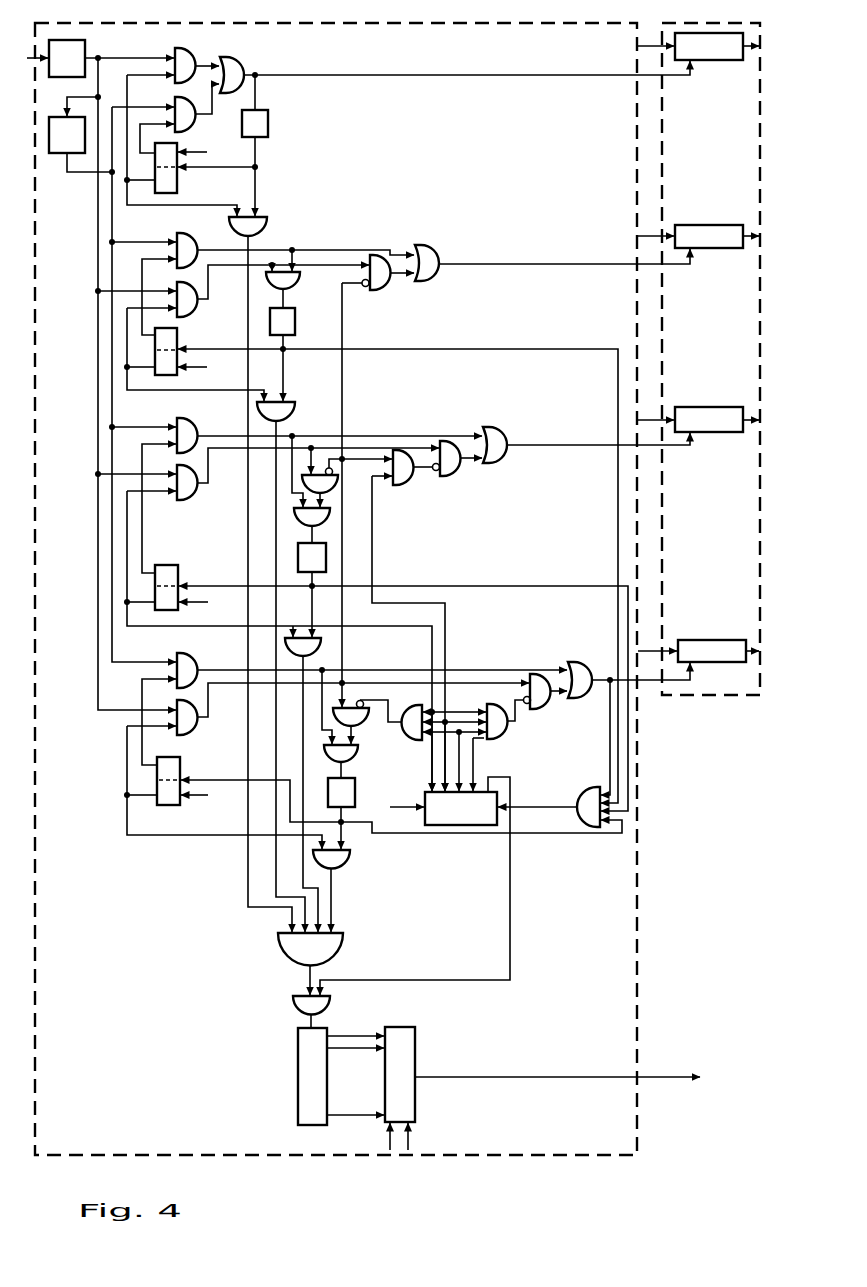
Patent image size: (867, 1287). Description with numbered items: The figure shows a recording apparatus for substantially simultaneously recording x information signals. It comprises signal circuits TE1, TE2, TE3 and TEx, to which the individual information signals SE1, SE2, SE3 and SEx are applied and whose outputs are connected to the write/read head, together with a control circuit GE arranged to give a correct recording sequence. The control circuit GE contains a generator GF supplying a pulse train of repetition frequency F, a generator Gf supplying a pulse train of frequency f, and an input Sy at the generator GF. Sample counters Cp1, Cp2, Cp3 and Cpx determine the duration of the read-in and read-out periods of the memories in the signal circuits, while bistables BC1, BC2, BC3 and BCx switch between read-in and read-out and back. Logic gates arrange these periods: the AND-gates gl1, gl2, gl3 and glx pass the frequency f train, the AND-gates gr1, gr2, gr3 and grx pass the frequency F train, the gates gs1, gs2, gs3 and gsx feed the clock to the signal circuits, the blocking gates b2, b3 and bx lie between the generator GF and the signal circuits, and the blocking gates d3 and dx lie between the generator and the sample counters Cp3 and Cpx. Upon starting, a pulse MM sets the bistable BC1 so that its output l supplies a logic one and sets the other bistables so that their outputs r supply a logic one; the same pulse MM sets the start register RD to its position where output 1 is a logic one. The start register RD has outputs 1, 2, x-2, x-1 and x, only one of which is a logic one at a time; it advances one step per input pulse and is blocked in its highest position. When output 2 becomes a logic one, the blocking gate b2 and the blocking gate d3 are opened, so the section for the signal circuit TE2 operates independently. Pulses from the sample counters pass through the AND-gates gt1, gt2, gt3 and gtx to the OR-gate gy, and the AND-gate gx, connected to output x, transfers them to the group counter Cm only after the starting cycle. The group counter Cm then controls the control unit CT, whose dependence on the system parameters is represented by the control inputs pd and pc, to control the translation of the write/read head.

The control circuit GE is at (648, 883).
The generator GF is at (86, 53).
The synchronizing signal Sy is at (30, 62).
The generator Gf is at (64, 154).
The AND-gate gr1 is at (206, 48).
The AND-gate gl1 is at (193, 128).
The OR-gate gs1 is at (244, 68).
The sample counter Cp1 is at (268, 124).
The bistable BC1 is at (177, 183).
The AND-gate gt1 is at (264, 234).
The AND-gate gl2 is at (197, 240).
The AND-gate gr2 is at (197, 312).
The sample counter Cp2 is at (295, 322).
The bistable BC2 is at (177, 338).
The blocking gate b2 is at (388, 285).
The OR-gate gs2 is at (446, 246).
The AND-gate gt2 is at (292, 418).
The AND-gate gl3 is at (206, 416).
The AND-gate gr3 is at (193, 500).
The blocking gate d3 is at (338, 488).
The sample counter Cp3 is at (326, 555).
The bistable BC3 is at (178, 572).
The blocking gate b3 is at (462, 474).
The OR-gate gs3 is at (512, 423).
The AND-gate gt3 is at (318, 652).
The AND-gate glx is at (186, 660).
The AND-gate grx is at (195, 732).
The blocking gate dx is at (366, 724).
The sample counter Cpx is at (355, 795).
The bistable BCx is at (176, 758).
The AND-gate gtx is at (348, 866).
The OR-gate gy is at (340, 952).
The AND-gate gx is at (328, 1004).
The group counter Cm is at (311, 1076).
The control unit CT is at (402, 1062).
The control input pd is at (388, 1133).
The control input pc is at (410, 1133).
The start register RD is at (464, 825).
The blocking gate bx is at (553, 708).
The OR-gate gsx is at (586, 660).
The signal circuit TE1 is at (716, 52).
The information signal SE1 is at (645, 46).
The signal circuit TE2 is at (720, 242).
The information signal SE2 is at (650, 236).
The signal circuit TE3 is at (716, 432).
The information signal SE3 is at (656, 420).
The signal circuit TEx is at (720, 657).
The information signal SEx is at (656, 651).
The start pulse MM is at (209, 150).
The bistable output l is at (146, 440).
The bistable output r is at (148, 492).
The start register output 1 is at (427, 790).
The start register output 2 is at (441, 790).
The start register output x-2 is at (464, 790).
The start register output x-1 is at (475, 790).
The start register output x is at (490, 788).